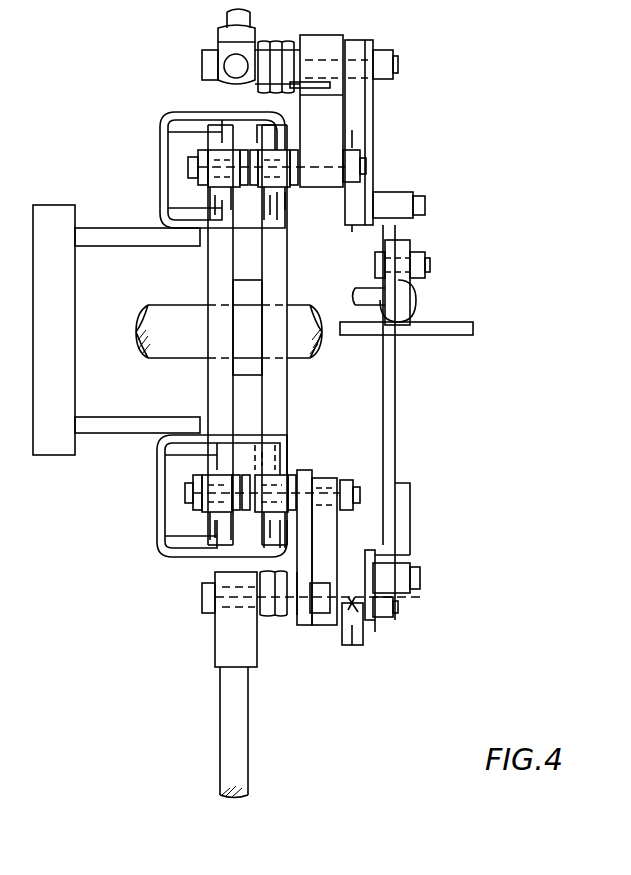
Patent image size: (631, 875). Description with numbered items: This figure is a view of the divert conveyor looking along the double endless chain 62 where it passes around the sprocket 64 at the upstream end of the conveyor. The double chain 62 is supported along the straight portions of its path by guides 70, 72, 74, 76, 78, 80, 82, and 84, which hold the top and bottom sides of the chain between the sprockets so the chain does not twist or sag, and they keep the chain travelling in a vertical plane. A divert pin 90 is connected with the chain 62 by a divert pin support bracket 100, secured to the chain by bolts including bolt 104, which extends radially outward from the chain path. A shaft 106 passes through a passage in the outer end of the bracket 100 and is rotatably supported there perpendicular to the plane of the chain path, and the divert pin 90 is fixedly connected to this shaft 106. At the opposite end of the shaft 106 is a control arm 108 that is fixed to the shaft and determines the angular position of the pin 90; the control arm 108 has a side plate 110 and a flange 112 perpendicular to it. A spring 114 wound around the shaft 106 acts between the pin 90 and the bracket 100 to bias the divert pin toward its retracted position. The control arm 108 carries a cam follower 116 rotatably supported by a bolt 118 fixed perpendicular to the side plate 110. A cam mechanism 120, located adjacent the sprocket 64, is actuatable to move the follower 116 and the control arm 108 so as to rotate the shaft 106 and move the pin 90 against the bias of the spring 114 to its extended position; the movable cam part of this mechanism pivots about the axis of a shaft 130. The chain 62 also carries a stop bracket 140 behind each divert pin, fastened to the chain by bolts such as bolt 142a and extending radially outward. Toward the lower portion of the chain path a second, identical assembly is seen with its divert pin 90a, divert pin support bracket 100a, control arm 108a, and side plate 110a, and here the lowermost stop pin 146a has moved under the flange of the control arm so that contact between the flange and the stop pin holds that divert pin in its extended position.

The double endless chain 62 is at (232, 258).
The sprocket 64 is at (289, 390).
The guide 70 is at (175, 140).
The guide 72 is at (275, 145).
The guide 74 is at (204, 204).
The guide 76 is at (282, 188).
The guide 78 is at (179, 467).
The guide 80 is at (284, 470).
The guide 82 is at (202, 517).
The guide 84 is at (265, 520).
The divert pin 90 is at (227, 18).
The divert pin 90a is at (238, 748).
The divert pin support bracket 100 is at (333, 35).
The divert pin support bracket 100a is at (303, 553).
The bolt 104 is at (318, 168).
The shaft 106 is at (203, 64).
The control arm 108 is at (378, 140).
The control arm 108a is at (376, 633).
The side plate 110 is at (368, 120).
The side plate 110a is at (372, 555).
The flange 112 is at (352, 230).
The spring 114 is at (287, 42).
The cam follower 116 is at (395, 194).
The bolt 118 is at (420, 208).
The cam mechanism 120 is at (397, 363).
The shaft 130 is at (430, 262).
The stop bracket 140 is at (315, 552).
The bolt 142a is at (347, 480).
The stop pin 146a is at (355, 603).